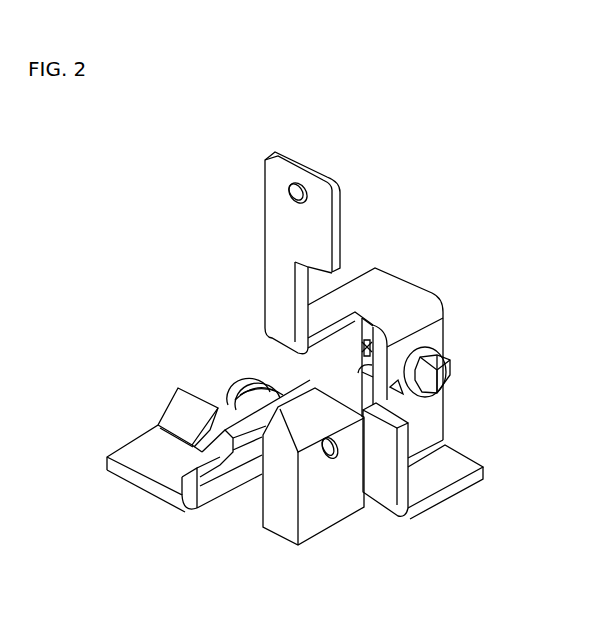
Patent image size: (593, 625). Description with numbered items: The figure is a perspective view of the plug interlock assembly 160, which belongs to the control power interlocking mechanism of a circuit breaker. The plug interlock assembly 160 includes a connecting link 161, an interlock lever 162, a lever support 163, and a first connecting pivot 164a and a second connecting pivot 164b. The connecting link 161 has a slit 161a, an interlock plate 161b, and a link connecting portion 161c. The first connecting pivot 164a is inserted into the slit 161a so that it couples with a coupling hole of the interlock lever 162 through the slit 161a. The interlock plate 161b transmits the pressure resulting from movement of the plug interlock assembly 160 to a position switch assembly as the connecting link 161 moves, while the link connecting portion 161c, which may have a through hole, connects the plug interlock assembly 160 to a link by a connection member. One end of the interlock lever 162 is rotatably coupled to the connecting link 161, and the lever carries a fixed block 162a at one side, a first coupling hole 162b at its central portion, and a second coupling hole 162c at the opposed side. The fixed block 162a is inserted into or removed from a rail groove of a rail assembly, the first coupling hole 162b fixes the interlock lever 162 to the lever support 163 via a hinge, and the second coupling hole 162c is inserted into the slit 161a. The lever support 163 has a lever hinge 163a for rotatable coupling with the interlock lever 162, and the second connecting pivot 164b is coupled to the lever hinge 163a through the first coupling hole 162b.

The plug interlock assembly 160 is at (160, 133).
The connecting link 161 is at (283, 226).
The slit 161a is at (395, 396).
The interlock plate 161b is at (438, 473).
The link connecting portion 161c is at (289, 196).
The interlock lever 162 is at (223, 475).
The fixed block 162a is at (152, 450).
The first coupling hole 162b is at (252, 385).
The second coupling hole 162c is at (367, 342).
The lever support 163 is at (316, 507).
The lever hinge 163a is at (334, 460).
The first connecting pivot 164a is at (458, 373).
The second connecting pivot 164b is at (237, 388).